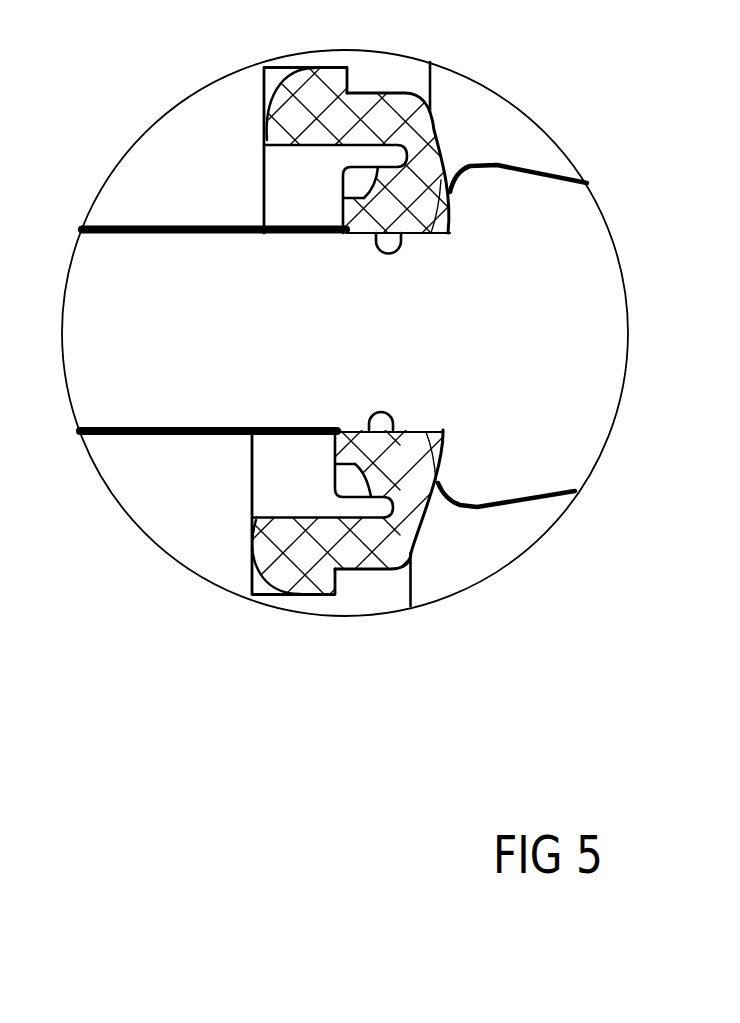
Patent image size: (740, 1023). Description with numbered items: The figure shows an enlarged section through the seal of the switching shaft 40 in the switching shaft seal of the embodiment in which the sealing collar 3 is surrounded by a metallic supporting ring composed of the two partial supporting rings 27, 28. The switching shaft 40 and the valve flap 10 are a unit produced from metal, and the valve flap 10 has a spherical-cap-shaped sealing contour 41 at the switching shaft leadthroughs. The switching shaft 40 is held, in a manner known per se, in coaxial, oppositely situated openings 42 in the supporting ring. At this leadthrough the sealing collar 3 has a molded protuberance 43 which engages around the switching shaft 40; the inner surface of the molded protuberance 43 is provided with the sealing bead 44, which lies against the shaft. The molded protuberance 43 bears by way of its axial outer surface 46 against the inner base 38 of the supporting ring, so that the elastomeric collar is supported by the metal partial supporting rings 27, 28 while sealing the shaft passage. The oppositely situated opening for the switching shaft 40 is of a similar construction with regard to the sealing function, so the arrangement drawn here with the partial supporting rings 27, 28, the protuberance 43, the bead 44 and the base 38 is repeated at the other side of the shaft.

The sealing collar 3 is at (407, 130).
The valve flap 10 is at (580, 328).
The partial supporting ring 27 is at (288, 173).
The partial supporting ring 28 is at (277, 475).
The inner base of the supporting ring 38 is at (340, 210).
The switching shaft 40 is at (193, 405).
The spherical-cap-shaped sealing contour 41 is at (478, 480).
The opening 42 is at (262, 237).
The molded protuberance 43 is at (358, 234).
The sealing bead 44 is at (393, 418).
The axial outer surface 46 is at (340, 210).